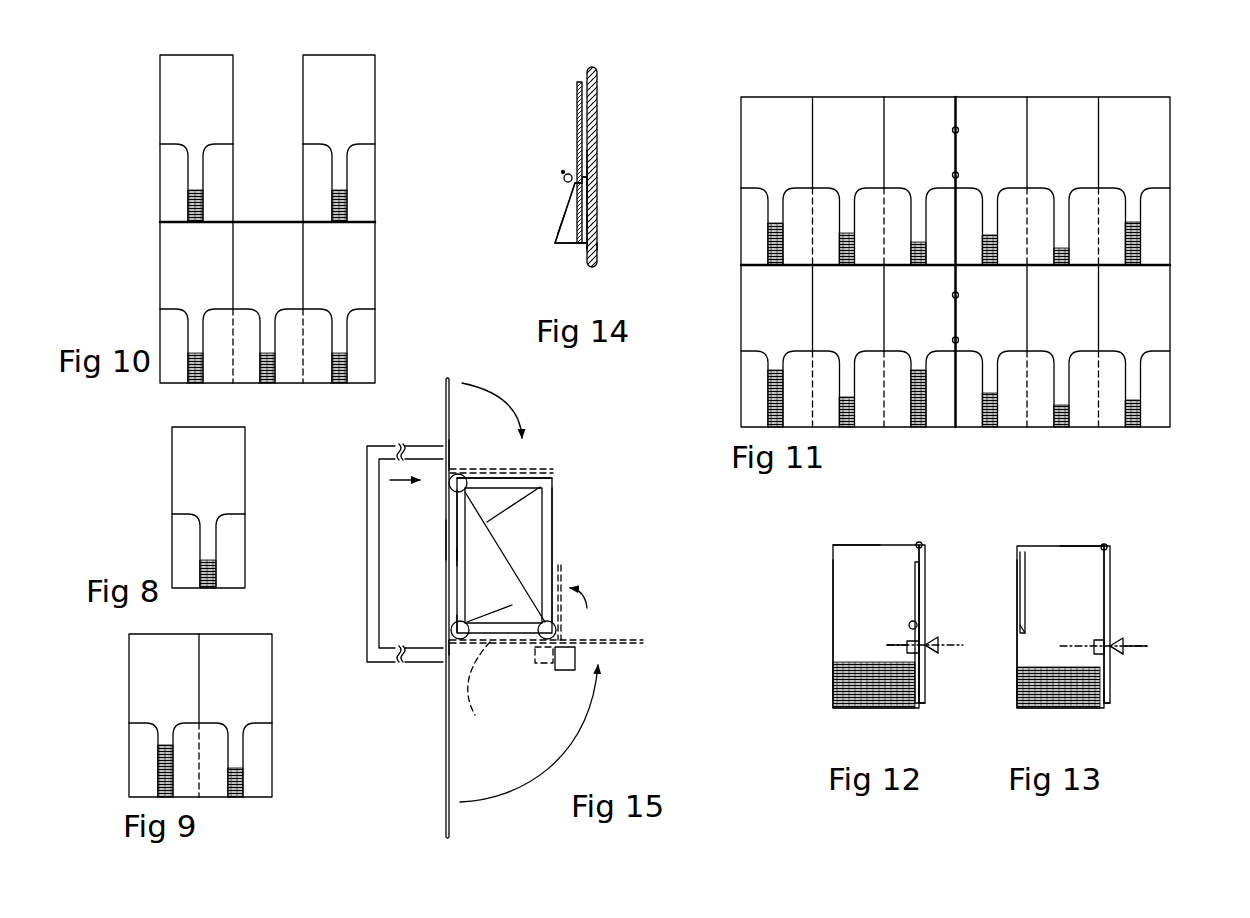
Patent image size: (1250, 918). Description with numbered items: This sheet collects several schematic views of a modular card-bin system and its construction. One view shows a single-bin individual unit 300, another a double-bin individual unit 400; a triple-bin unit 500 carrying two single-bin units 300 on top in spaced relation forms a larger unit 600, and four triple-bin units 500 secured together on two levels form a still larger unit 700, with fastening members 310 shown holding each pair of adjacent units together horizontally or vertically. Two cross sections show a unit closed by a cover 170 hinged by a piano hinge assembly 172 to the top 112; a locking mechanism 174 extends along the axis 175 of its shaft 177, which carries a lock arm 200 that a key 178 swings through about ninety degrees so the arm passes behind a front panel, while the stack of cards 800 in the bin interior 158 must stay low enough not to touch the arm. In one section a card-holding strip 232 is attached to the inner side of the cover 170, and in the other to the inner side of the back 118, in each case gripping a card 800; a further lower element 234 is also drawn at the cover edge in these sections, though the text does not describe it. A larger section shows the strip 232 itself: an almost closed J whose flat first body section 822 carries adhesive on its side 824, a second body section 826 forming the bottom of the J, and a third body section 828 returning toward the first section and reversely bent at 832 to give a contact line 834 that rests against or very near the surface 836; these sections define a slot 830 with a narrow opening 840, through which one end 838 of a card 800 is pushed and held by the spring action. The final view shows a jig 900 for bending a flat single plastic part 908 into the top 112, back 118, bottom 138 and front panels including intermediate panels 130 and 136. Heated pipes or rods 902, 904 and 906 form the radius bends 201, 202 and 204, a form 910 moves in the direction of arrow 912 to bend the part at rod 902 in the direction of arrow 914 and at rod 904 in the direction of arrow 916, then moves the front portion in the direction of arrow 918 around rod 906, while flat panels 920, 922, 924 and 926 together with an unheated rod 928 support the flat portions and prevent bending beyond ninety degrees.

In FIG. 12, the top 112 is at (850, 545).
In FIG. 13, the top 112 is at (1065, 546).
In FIG. 15, the top 112 is at (531, 468).
In FIG. 12, the back 118 is at (833, 605).
In FIG. 13, the back 118 is at (1015, 647).
In FIG. 15, the back 118 is at (446, 545).
In FIG. 15, the intermediate panel 130 is at (641, 599).
In FIG. 15, the intermediate panel 136 is at (562, 574).
In FIG. 15, the bottom 138 is at (488, 692).
In FIG. 12, the bin interior 158 is at (845, 565).
In FIG. 13, the bin interior 158 is at (1095, 590).
In FIG. 14, the cover 170 is at (597, 110).
In FIG. 12, the cover 170 is at (927, 556).
In FIG. 13, the cover 170 is at (1110, 570).
In FIG. 12, the piano hinge assembly 172 is at (919, 542).
In FIG. 13, the piano hinge assembly 172 is at (1104, 545).
In FIG. 12, the locking mechanism 174 is at (936, 638).
In FIG. 13, the locking mechanism 174 is at (1116, 640).
In FIG. 12, the axis 175 is at (880, 645).
In FIG. 13, the axis 175 is at (1150, 645).
In FIG. 12, the shaft 177 is at (907, 647).
In FIG. 13, the shaft 177 is at (1094, 646).
In FIG. 12, the key 178 is at (935, 652).
In FIG. 13, the key 178 is at (1125, 652).
In FIG. 12, the lock arm 200 is at (905, 655).
In FIG. 13, the lock arm 200 is at (1094, 650).
In FIG. 15, the radius bend 201 is at (450, 470).
In FIG. 15, the radius bend 202 is at (450, 647).
In FIG. 15, the radius bend 204 is at (567, 643).
In FIG. 14, the strip 232 is at (560, 172).
In FIG. 12, the strip 232 is at (912, 620).
In FIG. 13, the strip 232 is at (1023, 632).
In FIG. 12, the rail lower end 234 is at (922, 695).
In FIG. 13, the rail lower end 234 is at (1108, 683).
In FIG. 10, the single-bin individual unit 300 is at (157, 162).
In FIG. 8, the single-bin individual unit 300 is at (170, 472).
In FIG. 10, the fastening members 310 is at (338, 224).
In FIG. 11, the fastening members 310 is at (958, 130).
In FIG. 9, the double-bin individual unit 400 is at (127, 676).
In FIG. 10, the triple-bin unit 500 is at (158, 293).
In FIG. 11, the triple-bin unit 500 is at (739, 215).
In FIG. 10, the larger unit 600 is at (138, 92).
In FIG. 11, the larger unit 700 is at (728, 135).
In FIG. 10, the card 800 is at (190, 200).
In FIG. 8, the card 800 is at (216, 572).
In FIG. 9, the card 800 is at (165, 745).
In FIG. 14, the card 800 is at (576, 92).
In FIG. 11, the card 800 is at (918, 242).
In FIG. 12, the card 800 is at (862, 708).
In FIG. 13, the card 800 is at (1045, 708).
In FIG. 14, the first body section 822 is at (576, 200).
In FIG. 14, the side 824 is at (588, 180).
In FIG. 14, the second body section 826 is at (570, 245).
In FIG. 14, the third body section 828 is at (557, 222).
In FIG. 14, the slot 830 is at (575, 245).
In FIG. 14, the reverse bend 832 is at (570, 185).
In FIG. 14, the contact line 834 is at (591, 220).
In FIG. 14, the surface 836 is at (562, 168).
In FIG. 14, the card end 838 is at (590, 250).
In FIG. 12, the card end 838 is at (922, 578).
In FIG. 13, the card end 838 is at (1022, 578).
In FIG. 14, the opening 840 is at (564, 177).
In FIG. 15, the jig 900 is at (565, 519).
In FIG. 15, the heated pipe or rod 902 is at (462, 474).
In FIG. 15, the heated pipe or rod 904 is at (480, 618).
In FIG. 15, the heated pipe or rod 906 is at (545, 638).
In FIG. 15, the single plastic part 908 is at (443, 707).
In FIG. 15, the form 910 is at (383, 665).
In FIG. 15, the arrow 912 is at (388, 470).
In FIG. 15, the arrow 914 is at (520, 415).
In FIG. 15, the arrow 916 is at (578, 738).
In FIG. 15, the arrow 918 is at (587, 608).
In FIG. 15, the flat panel 920 is at (458, 557).
In FIG. 15, the flat panel 922 is at (443, 645).
In FIG. 15, the flat panel 924 is at (548, 553).
In FIG. 15, the flat panel 926 is at (463, 515).
In FIG. 15, the unheated pipe or rod 928 is at (553, 480).